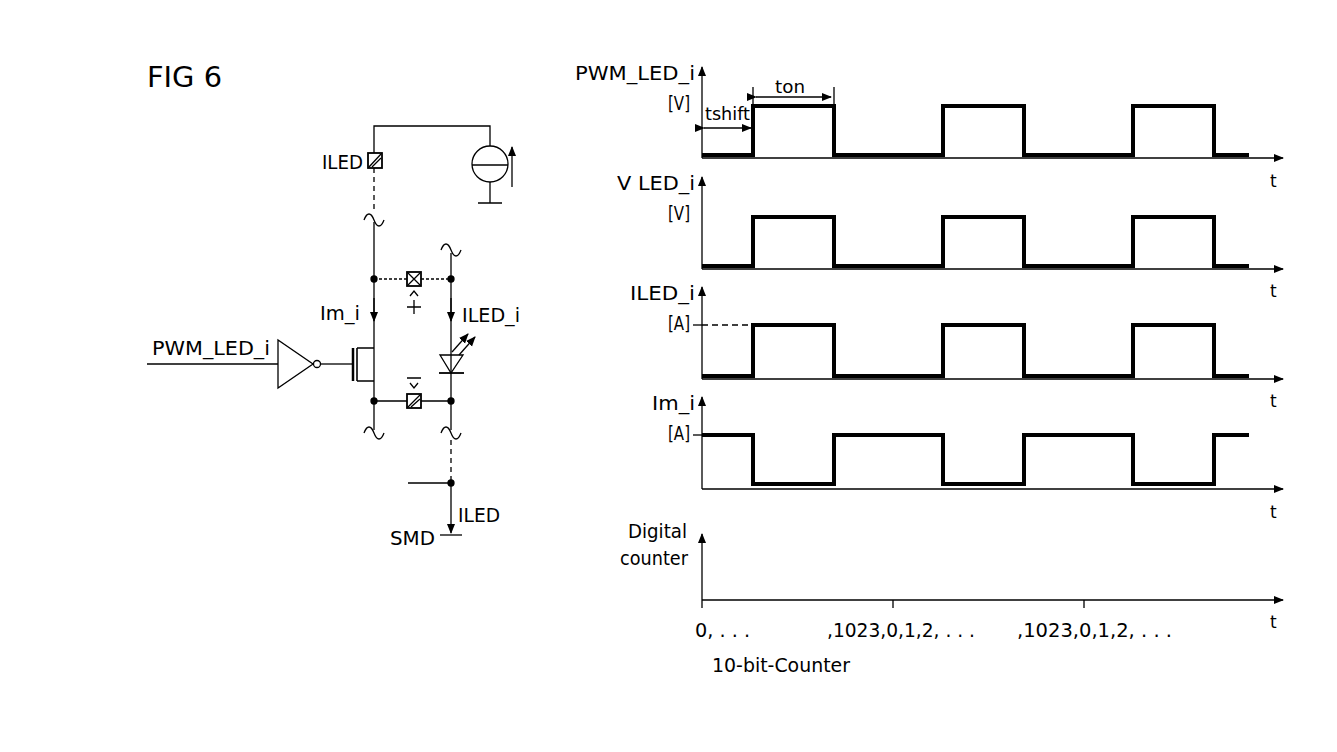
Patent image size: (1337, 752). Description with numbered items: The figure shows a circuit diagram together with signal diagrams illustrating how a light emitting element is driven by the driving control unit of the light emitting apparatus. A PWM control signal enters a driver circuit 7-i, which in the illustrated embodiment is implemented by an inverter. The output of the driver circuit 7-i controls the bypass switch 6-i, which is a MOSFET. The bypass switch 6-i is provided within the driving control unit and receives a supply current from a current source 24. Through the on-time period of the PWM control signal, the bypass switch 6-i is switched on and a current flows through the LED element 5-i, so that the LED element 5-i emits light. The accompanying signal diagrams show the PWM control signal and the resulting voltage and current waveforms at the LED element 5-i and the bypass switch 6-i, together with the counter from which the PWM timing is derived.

The driver circuit 7-i is at (278, 375).
The bypass switch 6-i is at (354, 375).
The LED element 5-i is at (440, 357).
The current source 24 is at (503, 178).